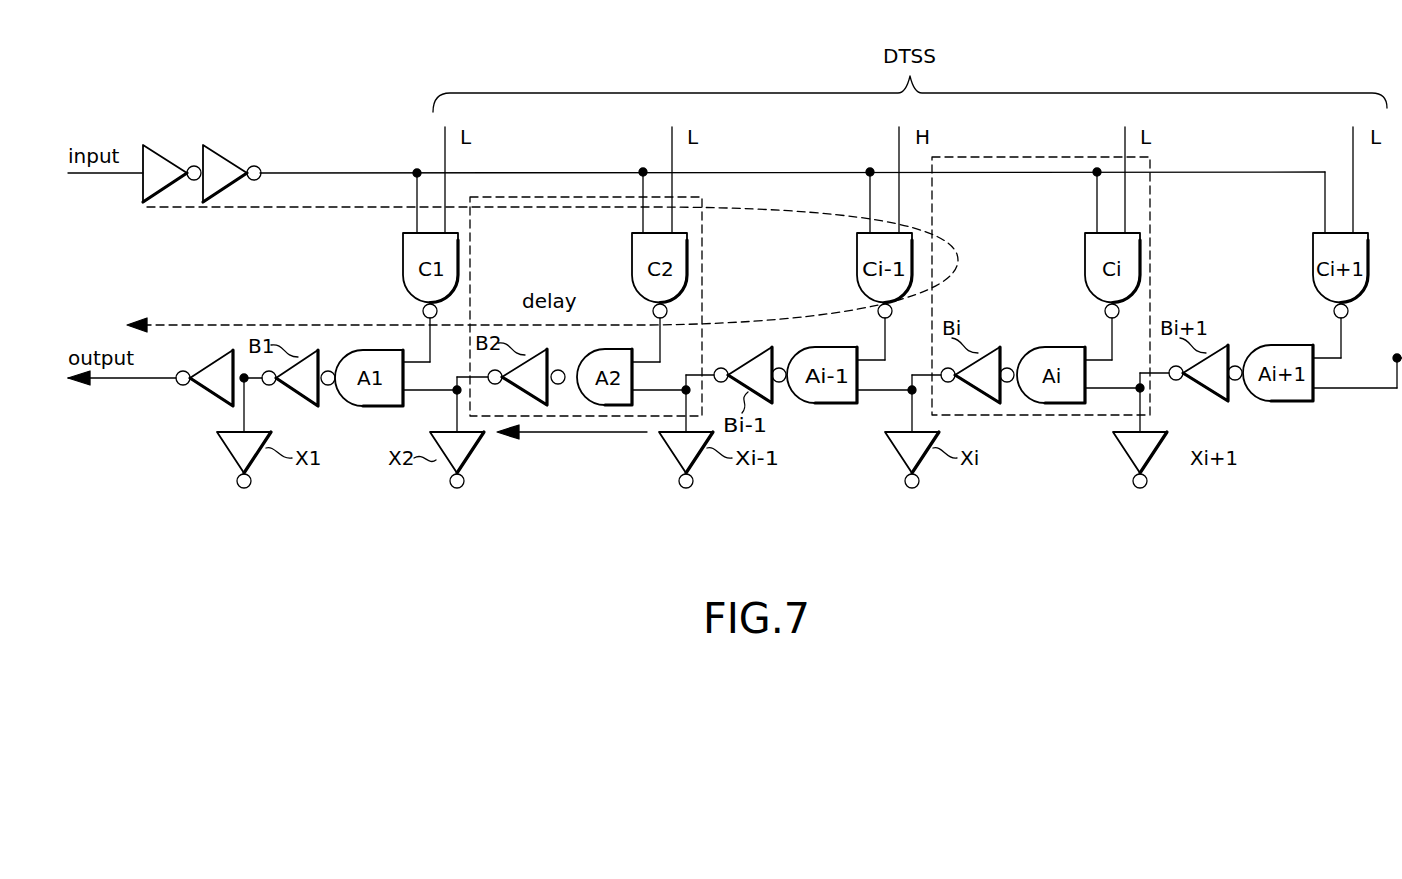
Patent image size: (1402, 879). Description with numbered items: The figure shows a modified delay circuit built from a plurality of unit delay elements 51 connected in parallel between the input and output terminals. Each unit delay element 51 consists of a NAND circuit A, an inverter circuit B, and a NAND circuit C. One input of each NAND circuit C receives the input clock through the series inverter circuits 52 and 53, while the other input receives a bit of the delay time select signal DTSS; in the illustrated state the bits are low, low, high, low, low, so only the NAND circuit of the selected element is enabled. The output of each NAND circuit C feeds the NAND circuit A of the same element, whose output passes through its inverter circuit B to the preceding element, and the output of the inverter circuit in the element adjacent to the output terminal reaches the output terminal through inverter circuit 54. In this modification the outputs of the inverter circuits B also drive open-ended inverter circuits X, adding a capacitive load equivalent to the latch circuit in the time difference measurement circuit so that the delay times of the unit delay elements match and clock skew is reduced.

The unit delay element 51 is at (1151, 212).
The inverter circuit 52 is at (165, 150).
The inverter circuit 53 is at (224, 150).
The inverter circuit 54 is at (200, 396).